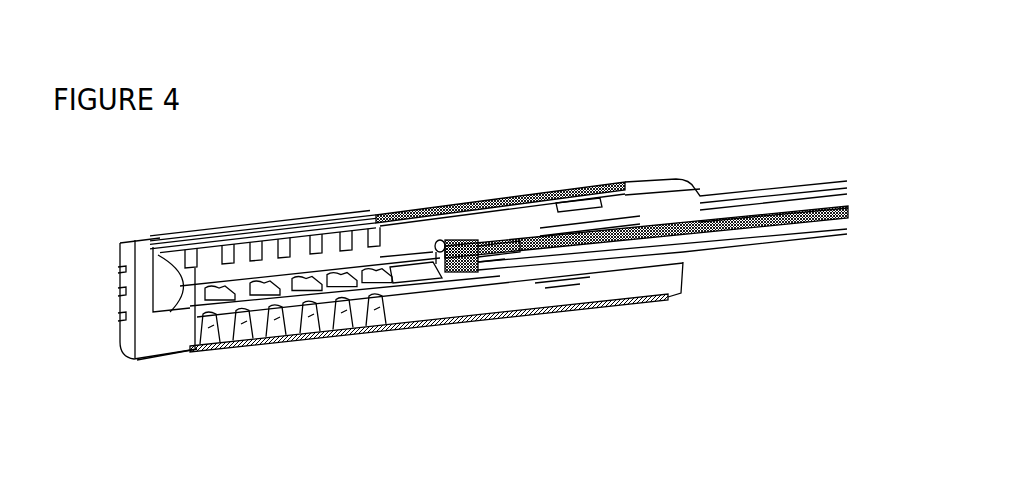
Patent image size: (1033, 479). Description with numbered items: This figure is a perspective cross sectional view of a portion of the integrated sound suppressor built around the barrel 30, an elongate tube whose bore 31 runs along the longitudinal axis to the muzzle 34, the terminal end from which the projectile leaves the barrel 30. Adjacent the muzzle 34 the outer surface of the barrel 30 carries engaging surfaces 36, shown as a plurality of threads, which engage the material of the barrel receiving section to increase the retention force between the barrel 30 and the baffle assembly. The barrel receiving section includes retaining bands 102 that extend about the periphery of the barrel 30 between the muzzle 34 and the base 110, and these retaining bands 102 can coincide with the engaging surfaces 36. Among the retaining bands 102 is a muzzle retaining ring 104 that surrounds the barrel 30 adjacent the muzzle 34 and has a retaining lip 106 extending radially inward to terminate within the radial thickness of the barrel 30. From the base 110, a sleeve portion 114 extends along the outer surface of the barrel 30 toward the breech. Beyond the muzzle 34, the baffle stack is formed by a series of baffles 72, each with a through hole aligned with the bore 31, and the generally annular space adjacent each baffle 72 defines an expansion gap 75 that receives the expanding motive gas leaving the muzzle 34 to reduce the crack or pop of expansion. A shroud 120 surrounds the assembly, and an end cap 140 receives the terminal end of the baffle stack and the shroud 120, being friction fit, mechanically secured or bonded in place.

The barrel 30 is at (708, 211).
The bore 31 is at (823, 218).
The muzzle 34 is at (442, 240).
The engaging surfaces 36 is at (457, 270).
The baffle 72 is at (277, 248).
The expansion gap 75 is at (353, 252).
The retaining bands 102 is at (577, 229).
The muzzle retaining ring 104 is at (457, 235).
The retaining lip 106 is at (440, 262).
The base 110 is at (662, 183).
The sleeve portion 114 is at (810, 190).
The shroud 120 is at (564, 202).
The end cap 140 is at (130, 350).